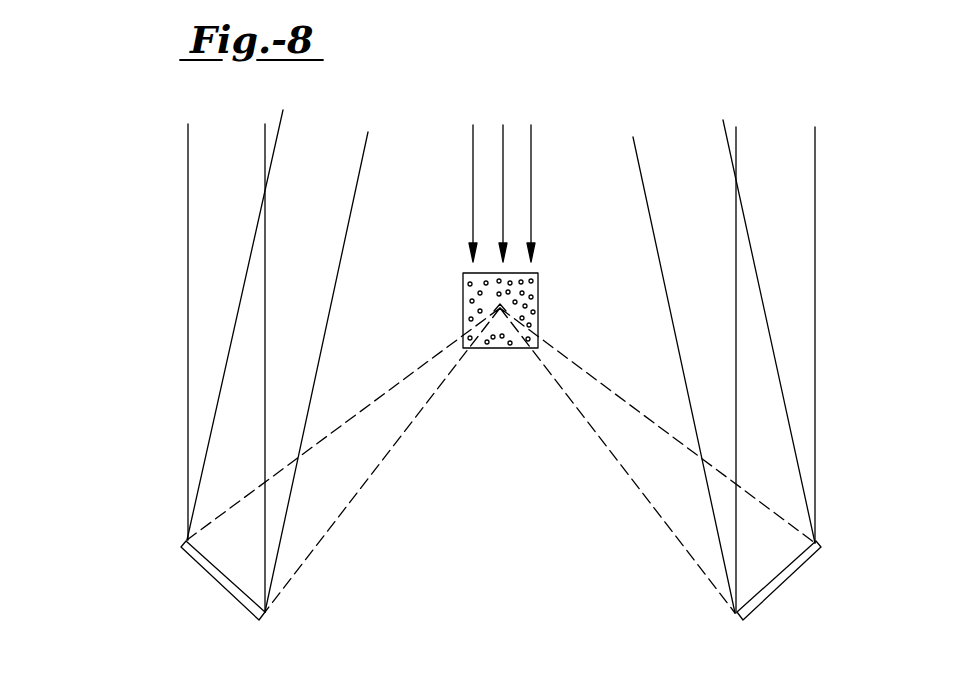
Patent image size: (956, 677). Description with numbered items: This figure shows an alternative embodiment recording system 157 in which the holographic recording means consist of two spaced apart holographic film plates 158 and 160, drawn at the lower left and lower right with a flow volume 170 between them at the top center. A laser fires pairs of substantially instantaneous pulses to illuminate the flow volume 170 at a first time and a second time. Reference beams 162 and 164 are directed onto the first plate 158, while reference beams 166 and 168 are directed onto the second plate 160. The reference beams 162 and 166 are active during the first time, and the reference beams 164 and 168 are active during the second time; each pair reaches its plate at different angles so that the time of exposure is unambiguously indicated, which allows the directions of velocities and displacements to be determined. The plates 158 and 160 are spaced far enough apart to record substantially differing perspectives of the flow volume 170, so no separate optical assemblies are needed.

The recording system 157 is at (160, 170).
The holographic film plate 158 is at (233, 597).
The holographic film plate 160 is at (750, 628).
The reference beam 162 is at (188, 130).
The reference beam 164 is at (280, 117).
The reference beam 166 is at (628, 137).
The reference beam 168 is at (733, 130).
The flow volume 170 is at (540, 303).